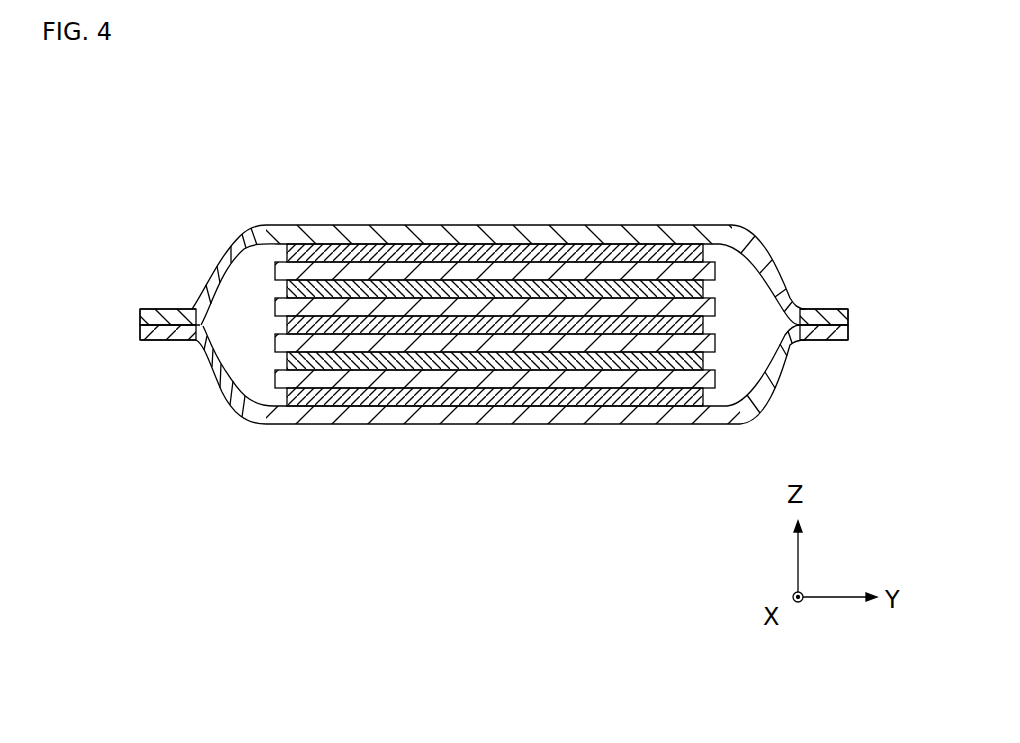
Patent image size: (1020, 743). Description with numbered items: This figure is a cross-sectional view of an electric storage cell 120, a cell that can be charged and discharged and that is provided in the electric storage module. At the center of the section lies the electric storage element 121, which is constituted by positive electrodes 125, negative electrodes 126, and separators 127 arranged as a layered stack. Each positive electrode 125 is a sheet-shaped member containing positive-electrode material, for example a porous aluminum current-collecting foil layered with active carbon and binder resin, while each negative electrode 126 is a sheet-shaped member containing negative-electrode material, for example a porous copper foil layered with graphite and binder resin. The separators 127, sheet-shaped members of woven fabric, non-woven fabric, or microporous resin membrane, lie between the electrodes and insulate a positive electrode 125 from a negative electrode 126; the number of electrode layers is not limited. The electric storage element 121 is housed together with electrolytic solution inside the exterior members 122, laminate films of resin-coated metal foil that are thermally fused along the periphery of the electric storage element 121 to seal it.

The electric storage cell 120 is at (738, 152).
The electric storage element 121 is at (180, 172).
The exterior member 122 is at (495, 225).
The positive electrode 125 is at (280, 288).
The negative electrode 126 is at (287, 322).
The separator 127 is at (282, 306).